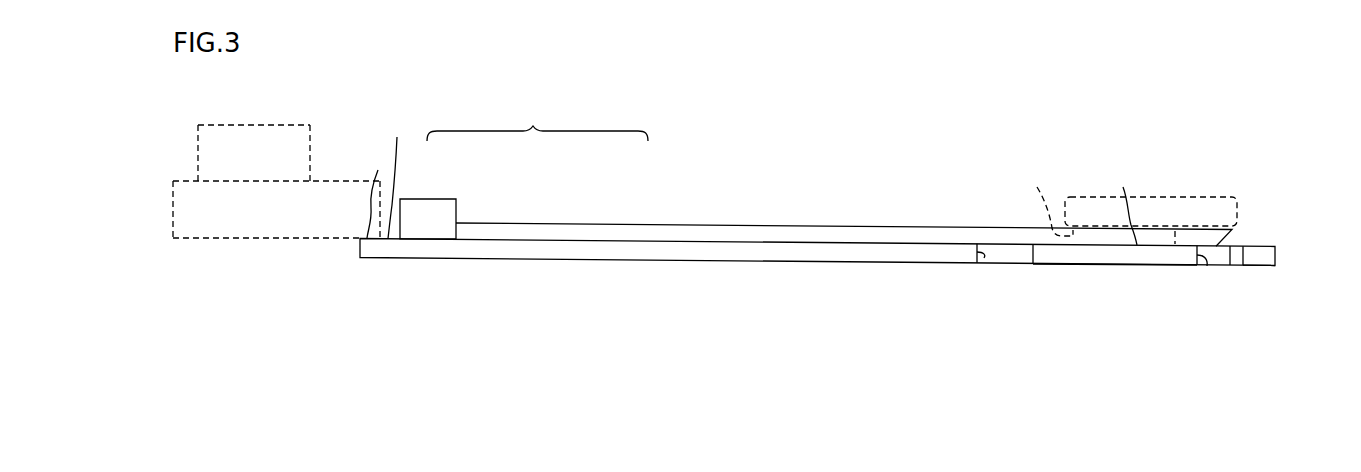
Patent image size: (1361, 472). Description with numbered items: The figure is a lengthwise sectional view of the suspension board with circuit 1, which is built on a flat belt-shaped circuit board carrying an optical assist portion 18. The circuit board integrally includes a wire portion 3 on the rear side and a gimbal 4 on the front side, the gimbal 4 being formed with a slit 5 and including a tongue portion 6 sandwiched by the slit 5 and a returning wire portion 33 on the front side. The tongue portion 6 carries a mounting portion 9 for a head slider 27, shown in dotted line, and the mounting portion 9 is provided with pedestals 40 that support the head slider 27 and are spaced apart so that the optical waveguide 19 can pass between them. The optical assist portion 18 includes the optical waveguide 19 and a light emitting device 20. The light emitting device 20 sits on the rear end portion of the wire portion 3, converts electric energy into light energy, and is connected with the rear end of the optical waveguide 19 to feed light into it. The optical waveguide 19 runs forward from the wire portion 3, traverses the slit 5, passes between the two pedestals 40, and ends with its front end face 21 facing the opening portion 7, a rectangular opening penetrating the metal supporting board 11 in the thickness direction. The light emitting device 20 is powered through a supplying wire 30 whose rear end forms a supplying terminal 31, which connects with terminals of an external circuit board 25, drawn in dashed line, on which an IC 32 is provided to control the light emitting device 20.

The suspension board with circuit 1 is at (716, 407).
The wire portion 3 is at (790, 290).
The gimbal 4 is at (1065, 302).
The slit 5 is at (982, 263).
The tongue portion 6 is at (1118, 265).
The opening portion 7 is at (1207, 266).
The mounting portion 9 is at (1126, 201).
The metal supporting board 11 is at (1277, 255).
The optical assist portion 18 is at (537, 119).
The optical waveguide 19 is at (618, 230).
The light emitting device 20 is at (440, 199).
The front end face 21 is at (1228, 240).
The external circuit board 25 is at (328, 181).
The head slider 27 is at (1208, 198).
The supplying wire 30 is at (400, 174).
The supplying terminal 31 is at (377, 190).
The IC 32 is at (250, 121).
The returning wire portion 33 is at (1263, 268).
The pedestal 40 is at (1045, 197).